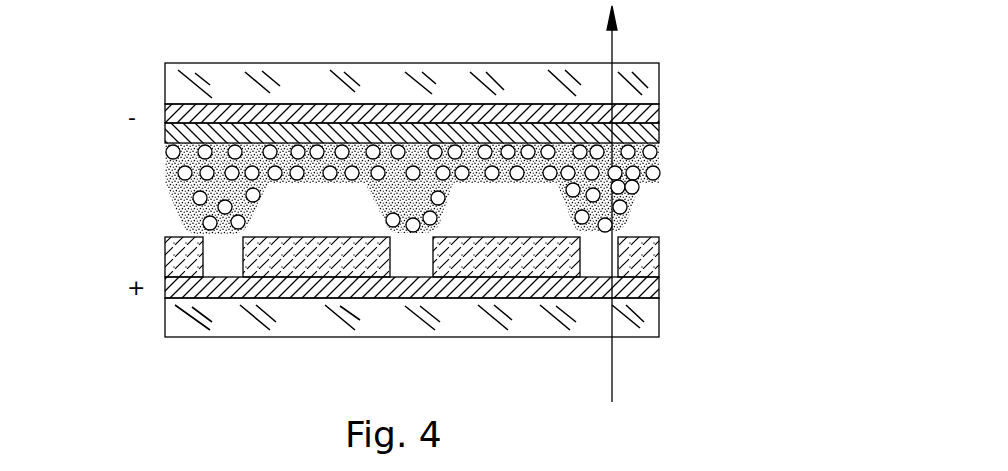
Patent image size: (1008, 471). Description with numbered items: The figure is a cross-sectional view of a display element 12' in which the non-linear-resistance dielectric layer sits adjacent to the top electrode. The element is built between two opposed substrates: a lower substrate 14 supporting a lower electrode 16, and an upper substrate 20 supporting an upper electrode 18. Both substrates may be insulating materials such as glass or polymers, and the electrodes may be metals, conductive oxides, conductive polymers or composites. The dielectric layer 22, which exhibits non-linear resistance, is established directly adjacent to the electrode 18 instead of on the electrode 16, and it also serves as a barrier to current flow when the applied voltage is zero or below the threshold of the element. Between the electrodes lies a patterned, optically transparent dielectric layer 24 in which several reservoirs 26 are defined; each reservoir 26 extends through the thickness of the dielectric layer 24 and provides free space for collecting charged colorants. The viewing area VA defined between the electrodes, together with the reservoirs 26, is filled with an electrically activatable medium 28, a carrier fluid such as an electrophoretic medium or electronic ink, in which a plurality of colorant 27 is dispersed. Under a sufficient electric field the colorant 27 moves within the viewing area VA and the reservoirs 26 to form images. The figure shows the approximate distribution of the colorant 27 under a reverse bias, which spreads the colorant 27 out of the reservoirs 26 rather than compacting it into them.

The display element 12' is at (785, 43).
The substrate 14 is at (640, 310).
The electrode 16 is at (640, 287).
The electrode 18 is at (168, 113).
The substrate 20 is at (478, 80).
The dielectric layer 22 is at (163, 137).
The dielectric layer 24 is at (318, 265).
The reservoir 26 is at (203, 258).
The colorant 27 is at (200, 198).
The electrically activatable medium 28 is at (423, 204).
The viewing area VA is at (330, 219).